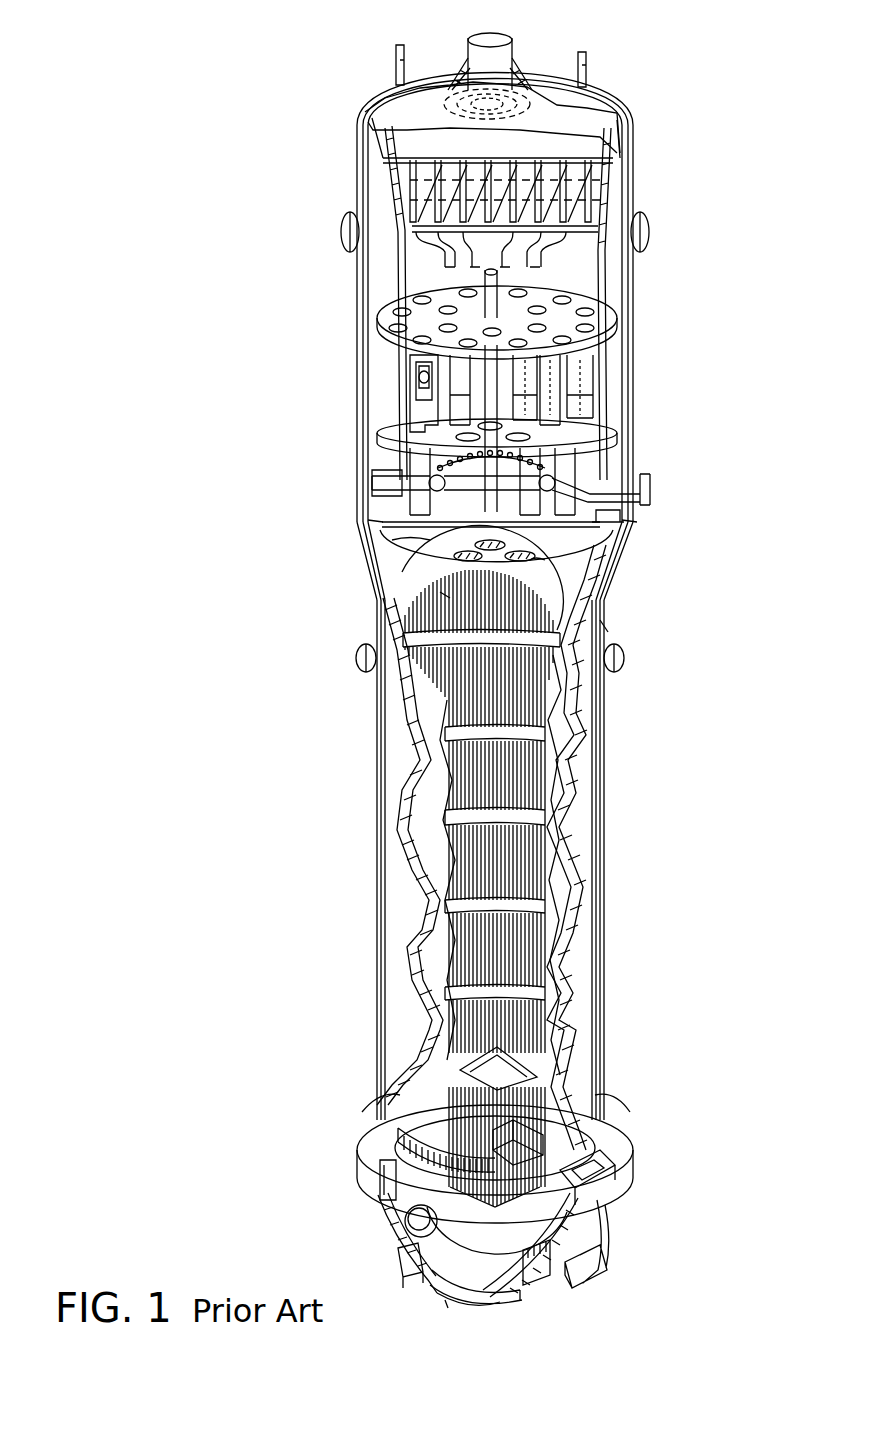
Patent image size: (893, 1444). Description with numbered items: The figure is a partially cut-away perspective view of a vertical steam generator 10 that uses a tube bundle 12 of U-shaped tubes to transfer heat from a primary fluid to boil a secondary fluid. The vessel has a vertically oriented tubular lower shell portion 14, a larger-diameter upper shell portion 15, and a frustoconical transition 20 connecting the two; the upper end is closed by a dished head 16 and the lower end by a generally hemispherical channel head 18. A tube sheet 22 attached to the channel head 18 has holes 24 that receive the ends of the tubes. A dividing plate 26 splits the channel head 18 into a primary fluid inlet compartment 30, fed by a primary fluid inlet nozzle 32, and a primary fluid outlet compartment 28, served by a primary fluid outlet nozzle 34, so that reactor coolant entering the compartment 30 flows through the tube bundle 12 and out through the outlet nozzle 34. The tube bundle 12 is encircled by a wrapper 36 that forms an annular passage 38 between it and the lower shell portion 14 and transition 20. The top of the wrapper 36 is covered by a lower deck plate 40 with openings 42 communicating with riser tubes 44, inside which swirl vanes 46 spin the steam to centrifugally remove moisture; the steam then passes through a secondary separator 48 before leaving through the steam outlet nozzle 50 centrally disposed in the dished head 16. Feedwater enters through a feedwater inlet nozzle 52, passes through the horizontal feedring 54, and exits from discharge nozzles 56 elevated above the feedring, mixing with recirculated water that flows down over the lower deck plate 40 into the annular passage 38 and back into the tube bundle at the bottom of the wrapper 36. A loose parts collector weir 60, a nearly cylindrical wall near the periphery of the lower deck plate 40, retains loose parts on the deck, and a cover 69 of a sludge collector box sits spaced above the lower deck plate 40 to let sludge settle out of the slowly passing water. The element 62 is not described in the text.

The steam generator 10 is at (533, 597).
The tube bundle 12 is at (524, 965).
The lower shell portion 14 is at (594, 882).
The upper shell portion 15 is at (632, 352).
The dished head 16 is at (620, 96).
The channel head 18 is at (575, 1190).
The frustoconical transition 20 is at (604, 628).
The tube sheet 22 is at (400, 1217).
The holes 24 is at (548, 1217).
The dividing plate 26 is at (425, 1273).
The primary fluid outlet compartment 28 is at (395, 1247).
The primary fluid inlet compartment 30 is at (580, 1245).
The primary fluid inlet nozzle 32 is at (593, 1282).
The primary fluid outlet nozzle 34 is at (475, 1297).
The wrapper 36 is at (428, 702).
The annular passage 38 is at (548, 780).
The lower deck plate 40 is at (445, 597).
The openings 42 is at (540, 562).
The riser tubes 44 is at (455, 513).
The swirl vanes 46 is at (416, 392).
The secondary separator 48 is at (599, 212).
The steam outlet nozzle 50 is at (500, 48).
The feedwater inlet nozzle 52 is at (640, 492).
The feedring 54 is at (509, 396).
The discharge nozzles 56 is at (440, 465).
The loose parts collector weir 60 is at (580, 530).
The outlet nozzle 62 is at (602, 520).
The cover 69 is at (430, 542).